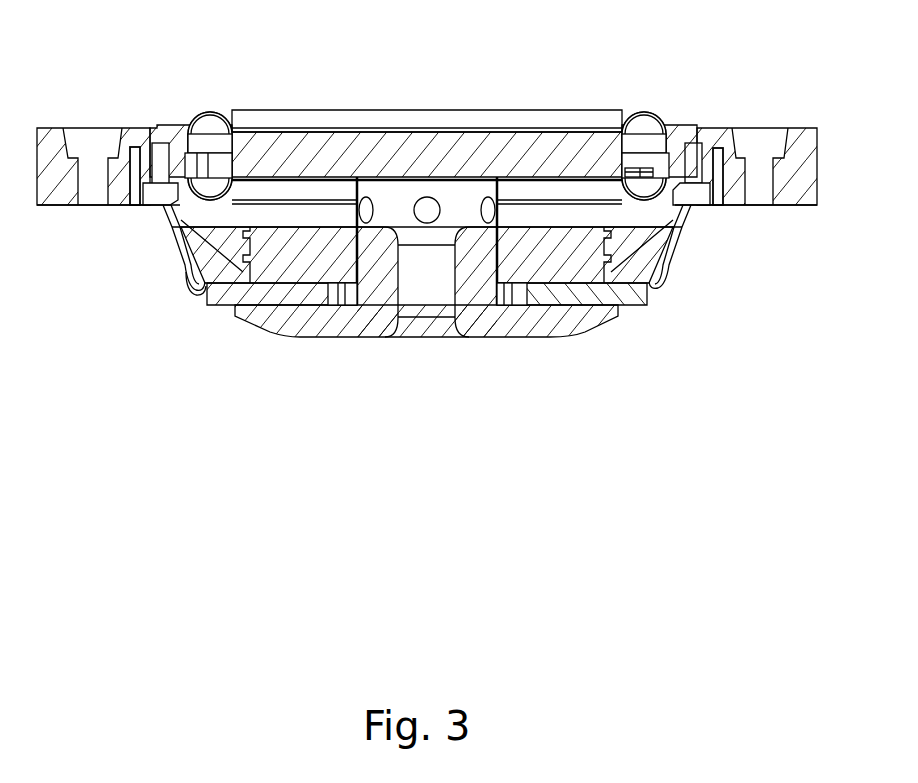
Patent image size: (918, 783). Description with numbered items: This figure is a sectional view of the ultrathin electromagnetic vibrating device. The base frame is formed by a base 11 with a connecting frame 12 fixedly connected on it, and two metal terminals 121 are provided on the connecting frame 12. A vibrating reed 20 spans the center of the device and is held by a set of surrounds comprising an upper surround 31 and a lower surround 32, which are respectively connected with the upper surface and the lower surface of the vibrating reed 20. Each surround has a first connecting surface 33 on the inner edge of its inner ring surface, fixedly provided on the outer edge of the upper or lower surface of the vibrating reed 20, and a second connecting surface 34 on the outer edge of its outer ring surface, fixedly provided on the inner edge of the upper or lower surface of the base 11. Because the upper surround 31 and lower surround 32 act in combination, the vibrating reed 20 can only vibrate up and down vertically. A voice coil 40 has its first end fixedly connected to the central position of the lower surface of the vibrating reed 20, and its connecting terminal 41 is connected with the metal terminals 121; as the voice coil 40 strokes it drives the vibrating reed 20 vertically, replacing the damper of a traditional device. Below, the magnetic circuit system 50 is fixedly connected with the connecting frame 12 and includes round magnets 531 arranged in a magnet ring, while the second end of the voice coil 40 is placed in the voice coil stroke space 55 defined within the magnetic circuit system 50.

The base 11 is at (715, 127).
The connecting frame 12 is at (181, 238).
The metal terminals 121 is at (185, 281).
The vibrating reed 20 is at (427, 110).
The upper surround 31 is at (233, 114).
The lower surround 32 is at (173, 207).
The first connecting surface 33 is at (266, 128).
The second connecting surface 34 is at (177, 124).
The voice coil 40 is at (463, 203).
The connecting terminal 41 is at (310, 147).
The magnetic circuit system 50 is at (493, 347).
The round magnets 531 is at (640, 295).
The voice coil stroke space 55 is at (505, 299).